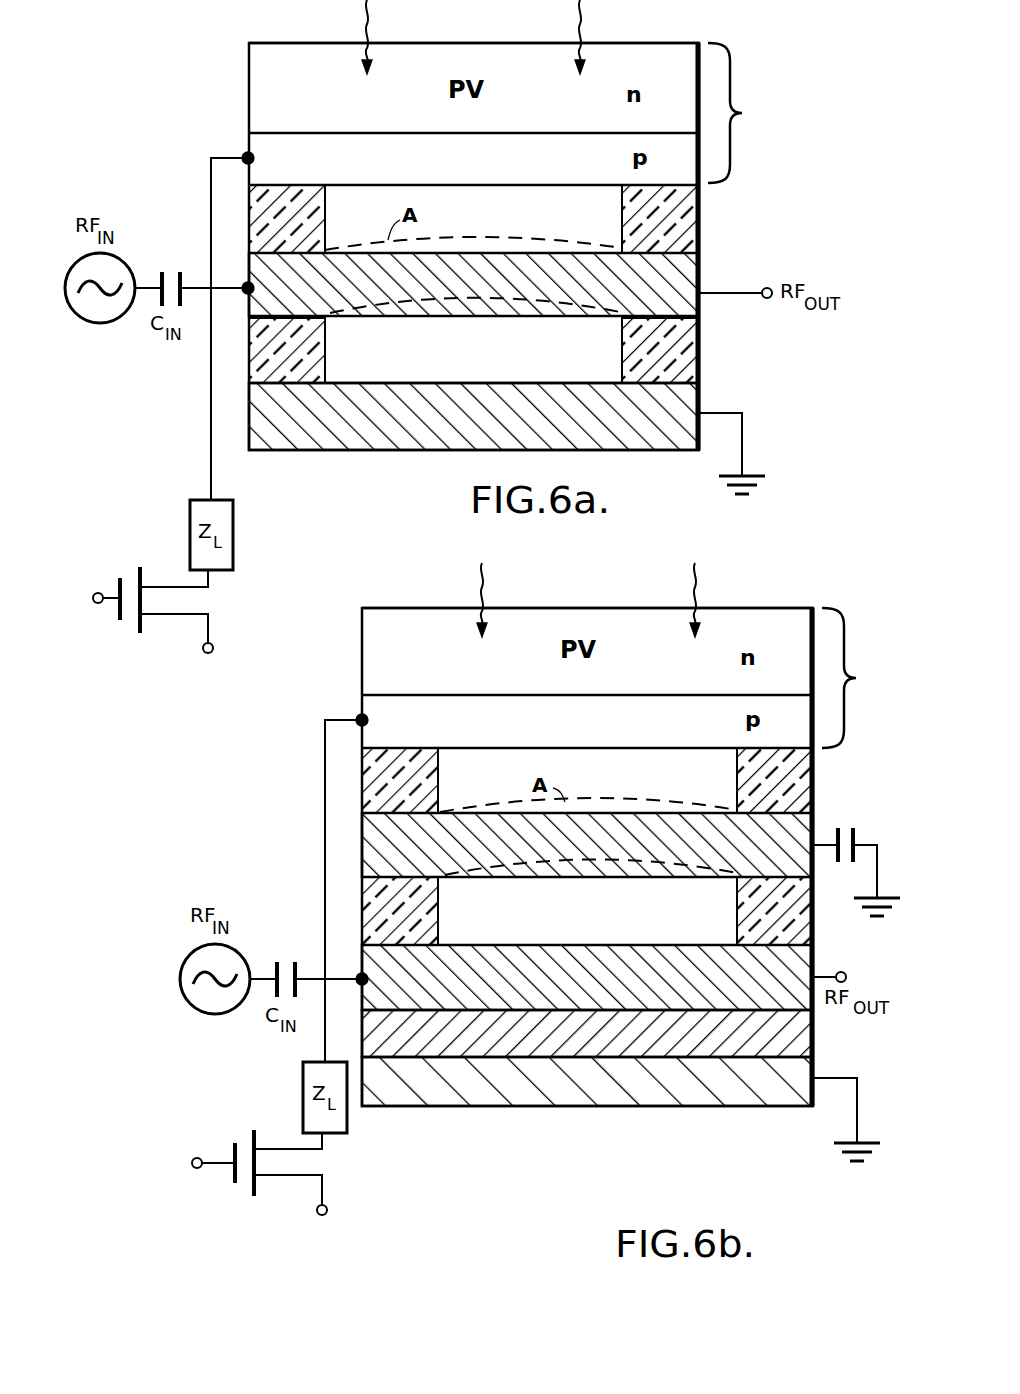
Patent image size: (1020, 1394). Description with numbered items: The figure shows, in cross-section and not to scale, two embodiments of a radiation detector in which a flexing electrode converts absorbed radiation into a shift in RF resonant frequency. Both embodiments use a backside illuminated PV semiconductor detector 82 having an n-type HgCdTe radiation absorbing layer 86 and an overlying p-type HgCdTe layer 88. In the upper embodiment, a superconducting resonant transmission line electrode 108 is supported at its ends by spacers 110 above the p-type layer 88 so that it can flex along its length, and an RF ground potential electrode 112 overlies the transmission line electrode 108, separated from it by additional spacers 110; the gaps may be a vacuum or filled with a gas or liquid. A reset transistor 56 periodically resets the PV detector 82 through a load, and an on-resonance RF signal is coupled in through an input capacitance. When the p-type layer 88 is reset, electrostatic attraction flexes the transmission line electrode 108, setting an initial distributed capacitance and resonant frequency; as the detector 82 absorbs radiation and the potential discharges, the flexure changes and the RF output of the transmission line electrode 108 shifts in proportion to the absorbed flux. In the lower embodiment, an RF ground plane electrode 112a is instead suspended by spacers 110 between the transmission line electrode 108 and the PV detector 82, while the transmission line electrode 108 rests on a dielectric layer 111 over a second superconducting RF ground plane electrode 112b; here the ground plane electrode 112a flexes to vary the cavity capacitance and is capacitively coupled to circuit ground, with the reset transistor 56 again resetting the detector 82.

In FIG. 6a, the PV semiconductor radiation detector 82 is at (746, 113).
In FIG. 6b, the PV semiconductor radiation detector 82 is at (861, 678).
In FIG. 6a, the n-type HgCdTe radiation absorbing layer 86 is at (253, 85).
In FIG. 6b, the n-type HgCdTe radiation absorbing layer 86 is at (370, 652).
In FIG. 6a, the p-type HgCdTe layer 88 is at (256, 147).
In FIG. 6b, the p-type HgCdTe layer 88 is at (390, 746).
In FIG. 6a, the spacers 110 is at (700, 215).
In FIG. 6b, the spacers 110 is at (366, 714).
In FIG. 6a, the superconducting resonant transmission line electrode 108 is at (700, 283).
In FIG. 6b, the superconducting resonant transmission line electrode 108 is at (817, 953).
In FIG. 6a, the RF ground potential electrode 112 is at (383, 450).
In FIG. 6b, the RF ground plane electrode 112a is at (815, 822).
In FIG. 6b, the second superconducting RF ground plane electrode 112b is at (530, 1108).
In FIG. 6b, the dielectric layer 111 is at (815, 1036).
In FIG. 6a, the reset transistor 56 is at (186, 588).
In FIG. 6b, the reset transistor 56 is at (298, 1153).